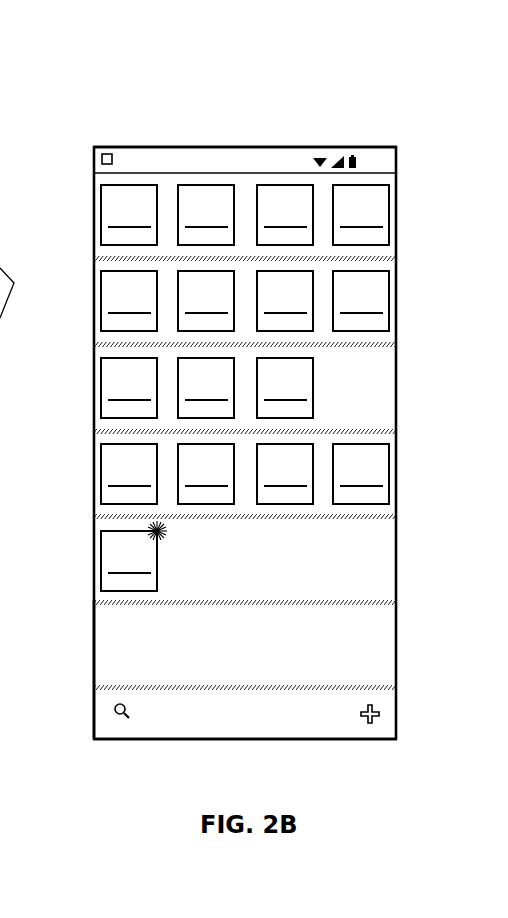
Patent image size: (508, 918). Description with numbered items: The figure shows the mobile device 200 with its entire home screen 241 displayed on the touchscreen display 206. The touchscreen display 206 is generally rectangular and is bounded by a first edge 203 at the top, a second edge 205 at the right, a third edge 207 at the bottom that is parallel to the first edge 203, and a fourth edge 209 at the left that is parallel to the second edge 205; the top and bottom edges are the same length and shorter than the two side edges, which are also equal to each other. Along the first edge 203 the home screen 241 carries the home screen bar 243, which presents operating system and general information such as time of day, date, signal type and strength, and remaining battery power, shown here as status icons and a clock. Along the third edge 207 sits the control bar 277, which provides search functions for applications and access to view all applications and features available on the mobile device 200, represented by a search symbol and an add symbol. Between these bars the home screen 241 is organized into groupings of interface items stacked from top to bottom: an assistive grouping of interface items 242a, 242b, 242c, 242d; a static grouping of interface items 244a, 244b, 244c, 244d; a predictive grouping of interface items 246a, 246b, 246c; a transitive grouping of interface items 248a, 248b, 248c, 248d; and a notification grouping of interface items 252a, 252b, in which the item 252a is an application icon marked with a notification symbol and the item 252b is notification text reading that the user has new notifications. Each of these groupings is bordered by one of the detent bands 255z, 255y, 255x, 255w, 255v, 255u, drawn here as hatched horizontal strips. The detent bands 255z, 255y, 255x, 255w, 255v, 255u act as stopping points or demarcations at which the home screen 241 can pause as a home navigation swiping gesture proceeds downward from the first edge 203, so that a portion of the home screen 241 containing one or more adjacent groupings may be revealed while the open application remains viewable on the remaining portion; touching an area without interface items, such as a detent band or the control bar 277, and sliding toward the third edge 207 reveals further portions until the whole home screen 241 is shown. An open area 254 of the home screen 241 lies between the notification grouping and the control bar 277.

The mobile device 200 is at (120, 52).
The first edge 203 is at (243, 146).
The home screen bar 243 is at (180, 157).
The assistive grouping of interface items 242a is at (129, 215).
The assistive grouping of interface items 242b is at (206, 215).
The assistive grouping of interface items 242c is at (285, 215).
The assistive grouping of interface items 242d is at (361, 215).
The static grouping of interface items 244a is at (129, 301).
The static grouping of interface items 244b is at (206, 301).
The static grouping of interface items 244c is at (285, 301).
The static grouping of interface items 244d is at (361, 301).
The predictive grouping of interface items 246a is at (129, 388).
The predictive grouping of interface items 246b is at (206, 388).
The predictive grouping of interface items 246c is at (285, 388).
The transitive grouping of interface items 248a is at (129, 474).
The transitive grouping of interface items 248b is at (206, 474).
The transitive grouping of interface items 248c is at (285, 474).
The transitive grouping of interface items 248d is at (361, 474).
The notification grouping of interface items 252a is at (134, 556).
The notification grouping of interface items 252b is at (387, 561).
The detent band 255z is at (396, 258).
The detent band 255y is at (396, 344).
The detent band 255x is at (396, 431).
The detent band 255w is at (396, 516).
The detent band 255v is at (396, 603).
The detent band 255u is at (396, 689).
The touchscreen display 206 is at (380, 403).
The second edge 205 is at (396, 645).
The empty region 254 is at (101, 632).
The fourth edge 209 is at (93, 670).
The third edge 207 is at (233, 742).
The home screen 241 is at (198, 643).
The control bar 277 is at (276, 725).